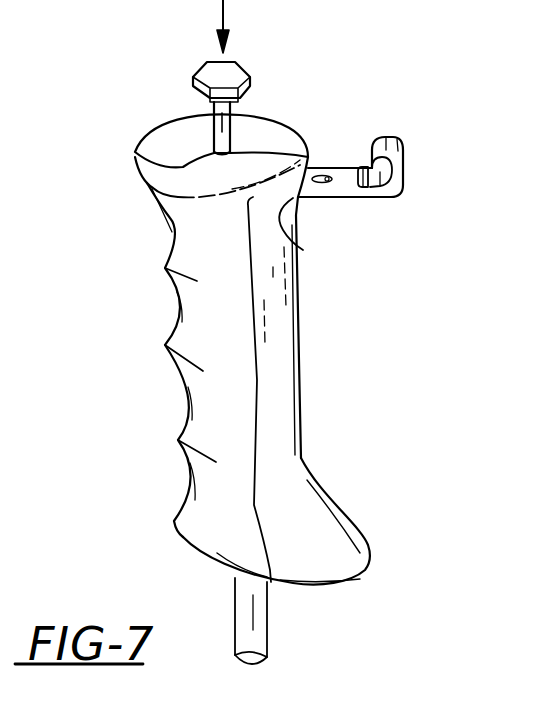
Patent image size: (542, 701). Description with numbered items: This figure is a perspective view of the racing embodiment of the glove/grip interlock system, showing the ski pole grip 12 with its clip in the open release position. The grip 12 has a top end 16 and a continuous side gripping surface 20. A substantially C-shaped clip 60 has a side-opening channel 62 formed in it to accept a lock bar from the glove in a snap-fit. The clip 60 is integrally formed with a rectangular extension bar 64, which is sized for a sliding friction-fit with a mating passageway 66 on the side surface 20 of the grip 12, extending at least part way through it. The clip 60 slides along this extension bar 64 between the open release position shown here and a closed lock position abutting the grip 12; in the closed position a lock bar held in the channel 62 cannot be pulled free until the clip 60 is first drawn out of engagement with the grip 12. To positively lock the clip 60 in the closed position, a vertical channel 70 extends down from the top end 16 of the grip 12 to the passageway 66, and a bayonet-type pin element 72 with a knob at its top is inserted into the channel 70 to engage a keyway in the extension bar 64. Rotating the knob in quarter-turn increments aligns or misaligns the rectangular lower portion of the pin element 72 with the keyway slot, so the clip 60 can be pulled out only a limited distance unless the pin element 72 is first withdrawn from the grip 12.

The ski pole grip 12 is at (186, 547).
The top end 16 is at (166, 139).
The side gripping surface 20 is at (192, 230).
The C-shaped clip 60 is at (380, 137).
The side-opening channel 62 is at (360, 167).
The extension bar 64 is at (345, 198).
The passageway 66 is at (303, 250).
The vertical channel 70 is at (137, 152).
The pin element 72 is at (240, 121).